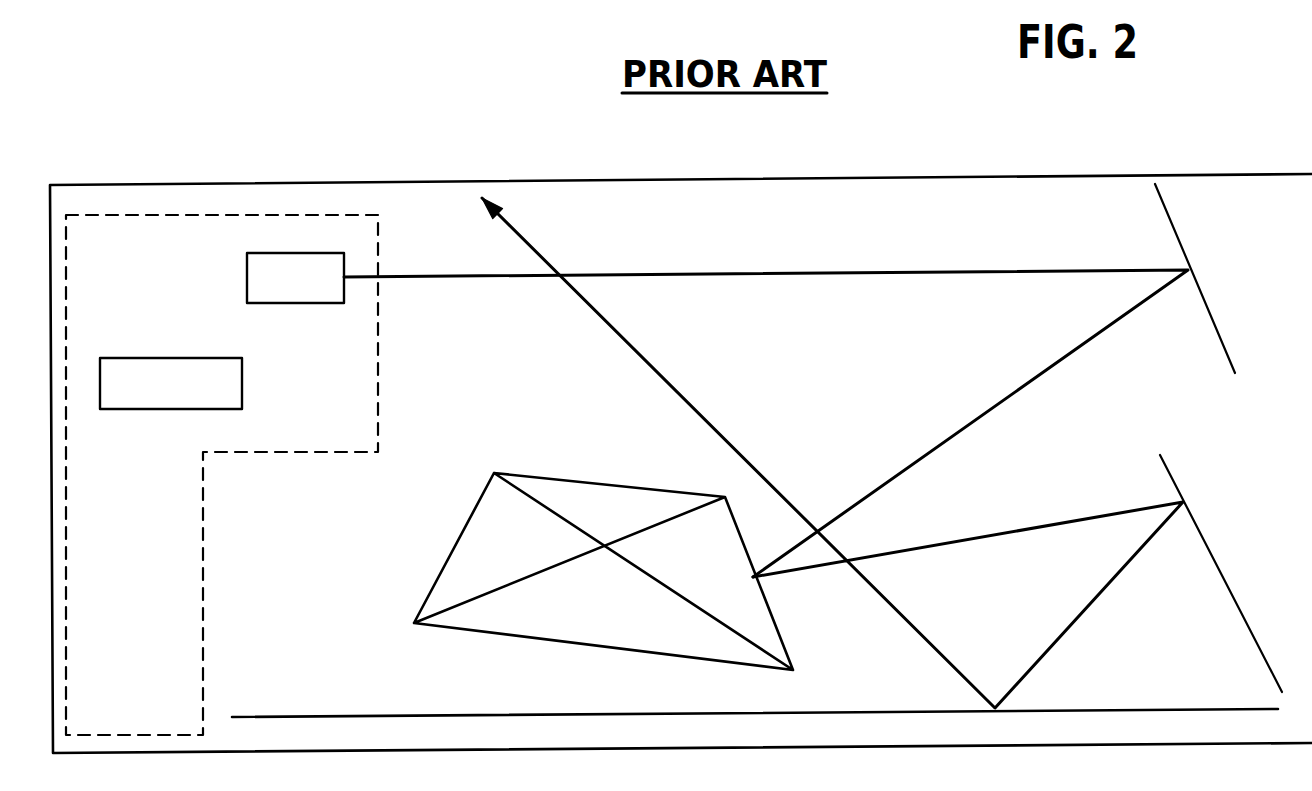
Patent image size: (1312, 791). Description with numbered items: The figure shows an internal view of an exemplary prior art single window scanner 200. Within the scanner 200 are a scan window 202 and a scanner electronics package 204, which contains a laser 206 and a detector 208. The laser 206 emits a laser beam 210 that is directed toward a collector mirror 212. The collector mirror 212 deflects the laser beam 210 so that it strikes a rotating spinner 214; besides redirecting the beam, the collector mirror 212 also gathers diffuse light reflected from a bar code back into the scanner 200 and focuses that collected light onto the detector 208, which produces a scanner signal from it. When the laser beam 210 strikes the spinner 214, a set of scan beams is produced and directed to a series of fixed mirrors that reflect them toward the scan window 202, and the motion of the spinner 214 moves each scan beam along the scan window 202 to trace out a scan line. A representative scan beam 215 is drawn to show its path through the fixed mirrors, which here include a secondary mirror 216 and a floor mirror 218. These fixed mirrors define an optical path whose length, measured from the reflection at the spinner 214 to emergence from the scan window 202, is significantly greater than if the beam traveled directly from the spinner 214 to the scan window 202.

The scanner 200 is at (240, 85).
The scan window 202 is at (433, 181).
The scanner electronics package 204 is at (203, 580).
The laser 206 is at (247, 279).
The detector 208 is at (242, 381).
The laser beam 210 is at (847, 272).
The collector mirror 212 is at (1213, 317).
The rotating spinner 214 is at (503, 640).
The scan beam 215 is at (1033, 527).
The secondary mirror 216 is at (1228, 578).
The floor mirror 218 is at (1195, 707).